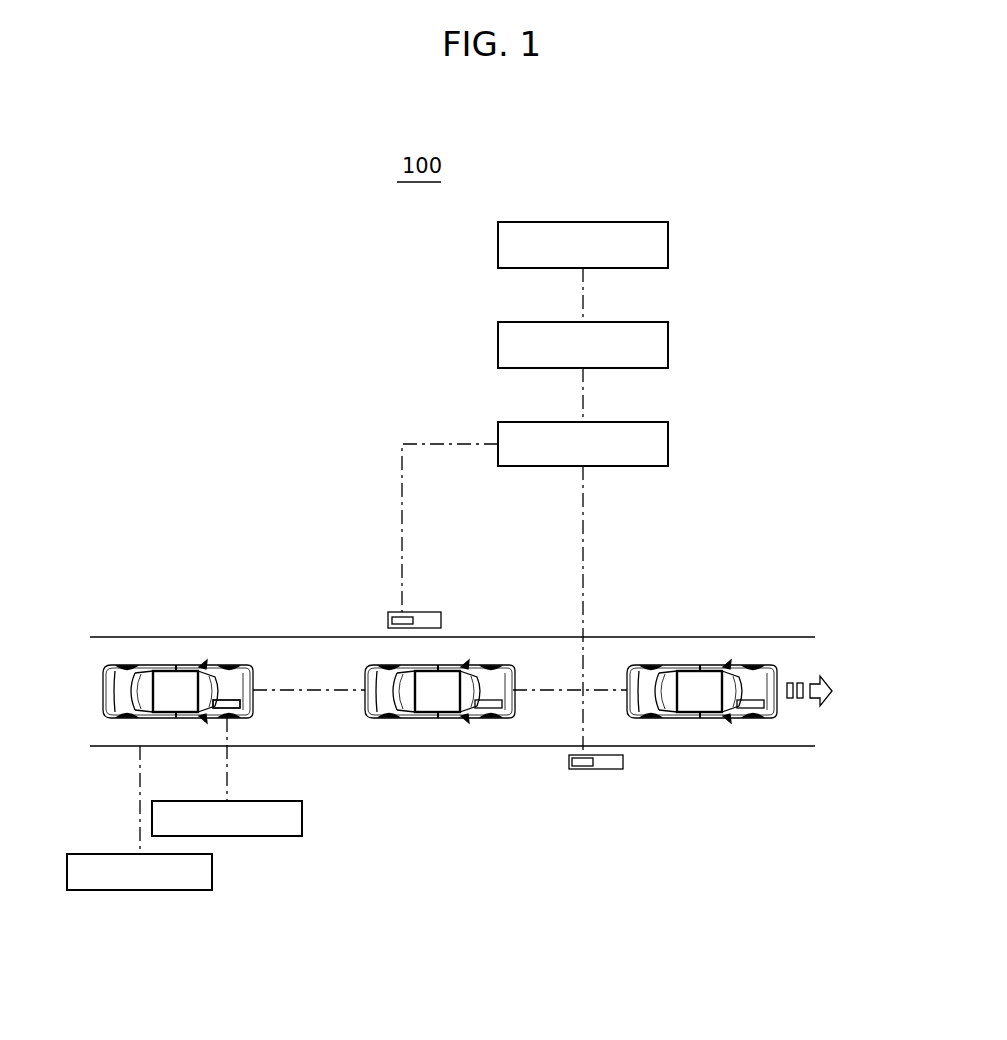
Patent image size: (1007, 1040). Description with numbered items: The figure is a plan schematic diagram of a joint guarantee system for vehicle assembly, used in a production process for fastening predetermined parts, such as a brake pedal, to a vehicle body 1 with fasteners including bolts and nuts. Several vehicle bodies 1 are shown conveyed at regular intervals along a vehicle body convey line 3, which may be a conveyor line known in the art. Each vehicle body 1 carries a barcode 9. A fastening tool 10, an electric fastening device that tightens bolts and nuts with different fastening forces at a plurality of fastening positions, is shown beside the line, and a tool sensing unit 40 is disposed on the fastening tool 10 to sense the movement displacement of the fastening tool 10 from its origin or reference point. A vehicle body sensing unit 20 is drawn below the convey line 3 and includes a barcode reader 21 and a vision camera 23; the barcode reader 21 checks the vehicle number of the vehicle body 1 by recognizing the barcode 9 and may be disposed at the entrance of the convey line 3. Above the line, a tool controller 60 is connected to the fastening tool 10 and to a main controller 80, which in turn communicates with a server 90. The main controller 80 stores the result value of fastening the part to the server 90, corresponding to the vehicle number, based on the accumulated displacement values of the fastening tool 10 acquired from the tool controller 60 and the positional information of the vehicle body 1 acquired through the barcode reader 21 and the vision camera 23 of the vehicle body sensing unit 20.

The server 90 is at (670, 247).
The main controller 80 is at (670, 347).
The tool controller 60 is at (670, 445).
The vehicle body 1 is at (210, 665).
The vehicle body convey line 3 is at (522, 750).
The barcode 9 is at (228, 700).
The fastening tool 10 is at (497, 701).
The tool sensing unit 40 is at (388, 620).
The vehicle body sensing unit 20 is at (184, 861).
The barcode reader 21 is at (227, 838).
The vision camera 23 is at (140, 893).